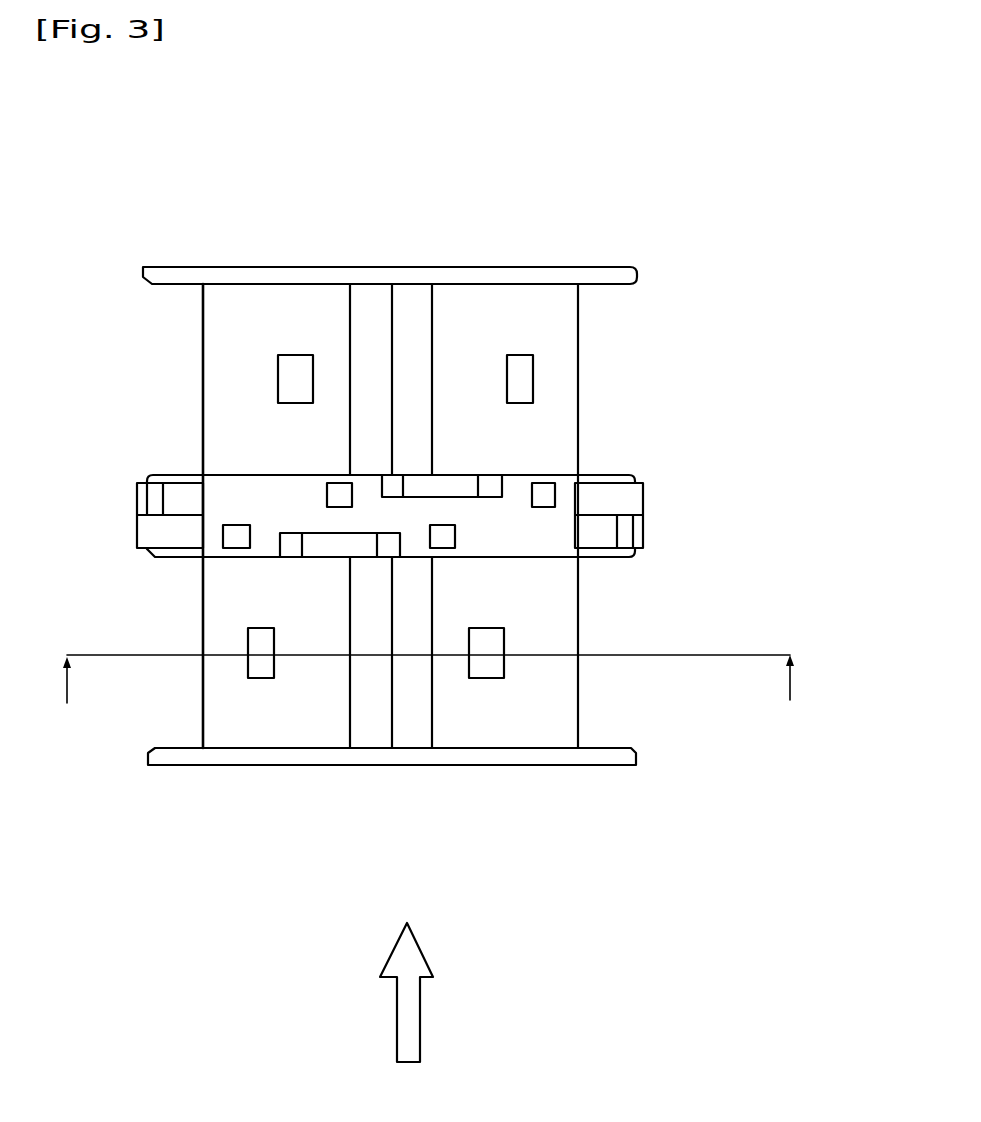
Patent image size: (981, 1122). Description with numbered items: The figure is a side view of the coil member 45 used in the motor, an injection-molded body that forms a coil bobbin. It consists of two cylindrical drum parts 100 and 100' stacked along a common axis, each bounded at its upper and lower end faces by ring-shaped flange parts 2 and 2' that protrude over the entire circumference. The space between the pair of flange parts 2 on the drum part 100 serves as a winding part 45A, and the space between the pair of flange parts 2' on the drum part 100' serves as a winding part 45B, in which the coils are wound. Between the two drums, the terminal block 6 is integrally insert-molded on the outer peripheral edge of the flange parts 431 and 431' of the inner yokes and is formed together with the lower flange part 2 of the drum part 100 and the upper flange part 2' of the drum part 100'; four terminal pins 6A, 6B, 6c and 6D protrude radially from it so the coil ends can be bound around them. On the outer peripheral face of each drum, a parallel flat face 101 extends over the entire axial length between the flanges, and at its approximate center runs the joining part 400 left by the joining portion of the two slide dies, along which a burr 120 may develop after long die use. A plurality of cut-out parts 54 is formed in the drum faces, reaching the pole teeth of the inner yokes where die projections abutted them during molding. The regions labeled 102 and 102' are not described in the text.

The coil member 45 is at (678, 138).
The winding part 45A is at (167, 384).
The winding part 45B is at (180, 672).
The drum part 100 is at (458, 480).
The drum part 100' is at (441, 709).
The parallel flat face 101 is at (358, 318).
The elastic body 102 is at (385, 321).
The elastic body 102' is at (390, 714).
The joining part 400 is at (396, 360).
The burr 120 is at (391, 516).
The cut-out part 54 is at (297, 370).
The flange part 2 is at (424, 330).
The flange part 2' is at (441, 694).
The terminal block 6 is at (230, 493).
The terminal pin 6A is at (230, 540).
The terminal pin 6B is at (340, 495).
The terminal pin 6c is at (443, 530).
The terminal pin 6D is at (545, 490).
The flange part of inner yoke 431 is at (440, 512).
The flange part of inner yoke 431' is at (683, 530).